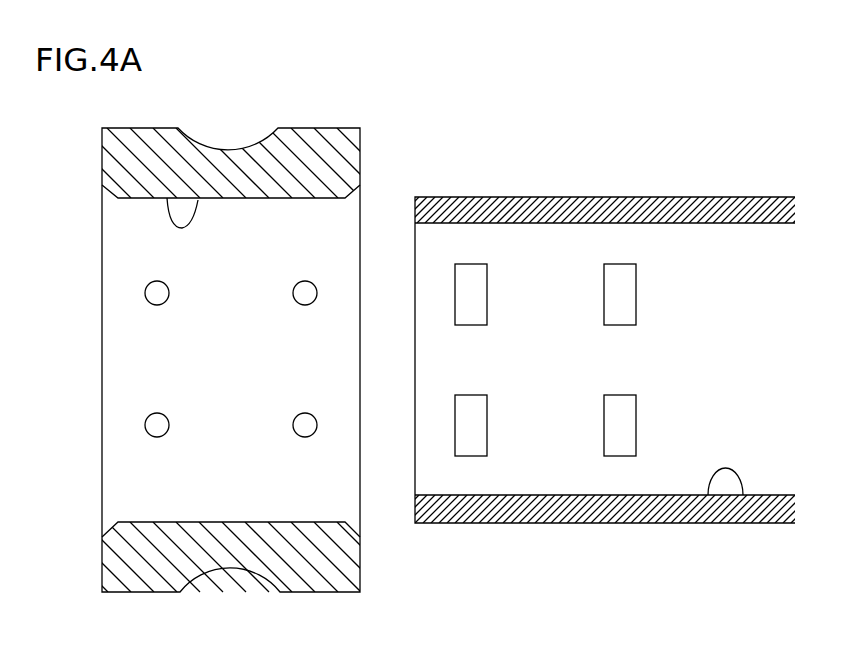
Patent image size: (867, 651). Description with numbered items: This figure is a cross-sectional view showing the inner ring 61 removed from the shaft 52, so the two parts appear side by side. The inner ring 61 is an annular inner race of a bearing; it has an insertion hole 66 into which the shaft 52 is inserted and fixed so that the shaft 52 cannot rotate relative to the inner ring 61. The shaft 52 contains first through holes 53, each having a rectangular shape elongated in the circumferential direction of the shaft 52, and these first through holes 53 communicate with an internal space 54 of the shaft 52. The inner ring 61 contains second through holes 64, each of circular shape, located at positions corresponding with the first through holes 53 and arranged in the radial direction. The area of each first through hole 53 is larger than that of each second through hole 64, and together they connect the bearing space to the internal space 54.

The inner ring 61 is at (315, 152).
The insertion hole 66 is at (198, 200).
The second through hole 64 is at (167, 293).
The shaft 52 is at (713, 210).
The first through hole 53 is at (462, 290).
The internal space 54 is at (740, 495).